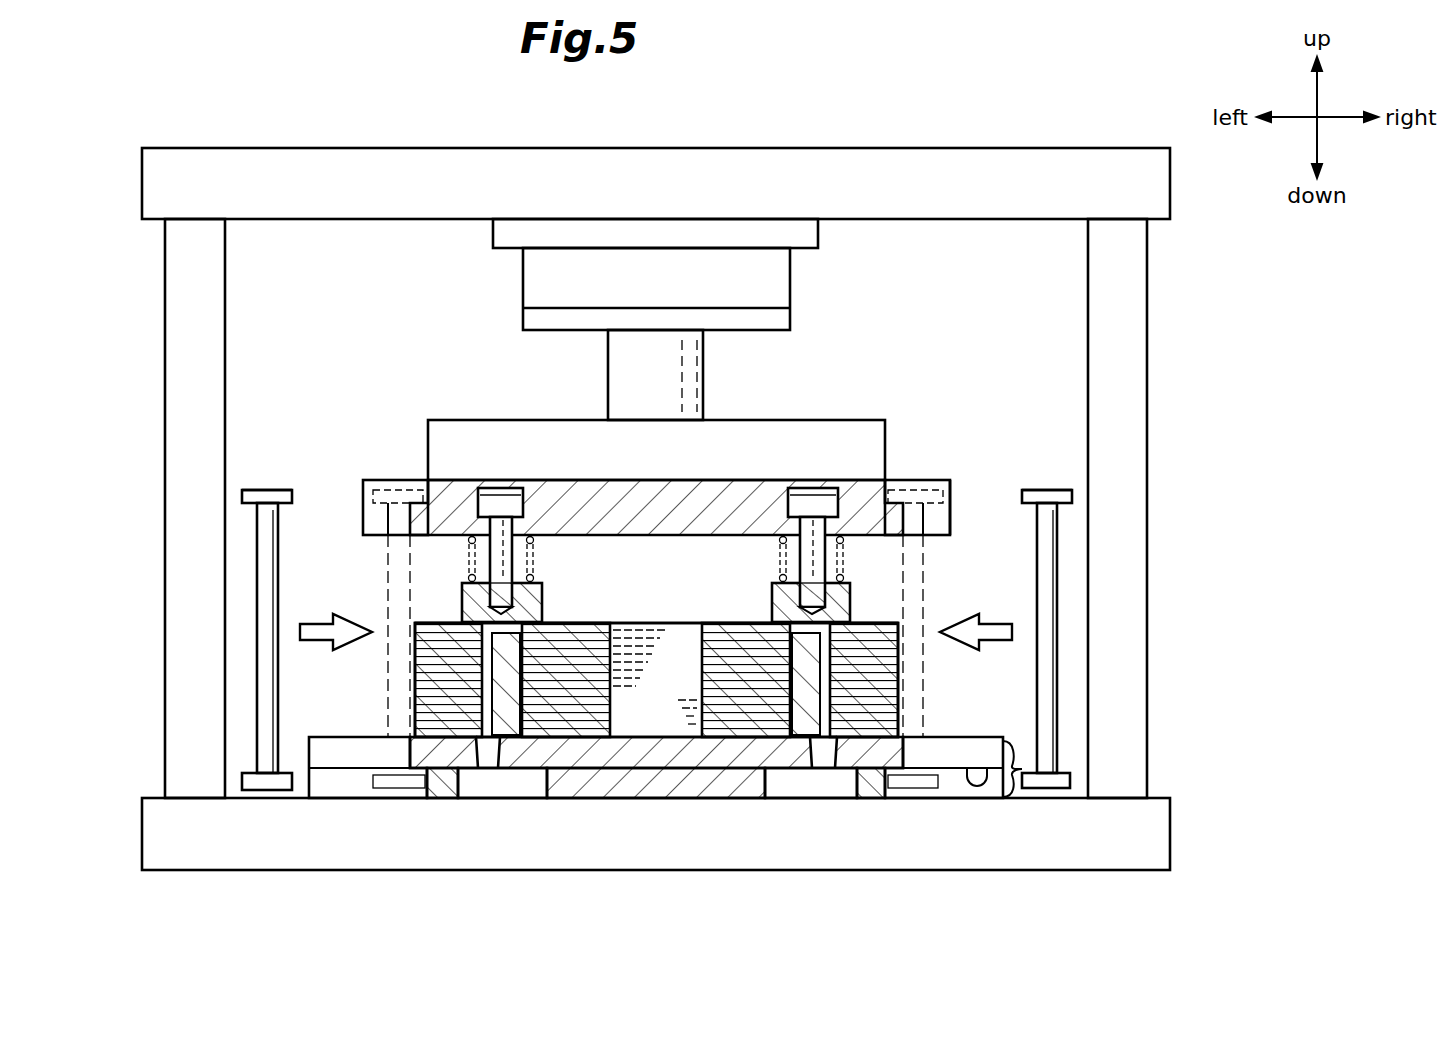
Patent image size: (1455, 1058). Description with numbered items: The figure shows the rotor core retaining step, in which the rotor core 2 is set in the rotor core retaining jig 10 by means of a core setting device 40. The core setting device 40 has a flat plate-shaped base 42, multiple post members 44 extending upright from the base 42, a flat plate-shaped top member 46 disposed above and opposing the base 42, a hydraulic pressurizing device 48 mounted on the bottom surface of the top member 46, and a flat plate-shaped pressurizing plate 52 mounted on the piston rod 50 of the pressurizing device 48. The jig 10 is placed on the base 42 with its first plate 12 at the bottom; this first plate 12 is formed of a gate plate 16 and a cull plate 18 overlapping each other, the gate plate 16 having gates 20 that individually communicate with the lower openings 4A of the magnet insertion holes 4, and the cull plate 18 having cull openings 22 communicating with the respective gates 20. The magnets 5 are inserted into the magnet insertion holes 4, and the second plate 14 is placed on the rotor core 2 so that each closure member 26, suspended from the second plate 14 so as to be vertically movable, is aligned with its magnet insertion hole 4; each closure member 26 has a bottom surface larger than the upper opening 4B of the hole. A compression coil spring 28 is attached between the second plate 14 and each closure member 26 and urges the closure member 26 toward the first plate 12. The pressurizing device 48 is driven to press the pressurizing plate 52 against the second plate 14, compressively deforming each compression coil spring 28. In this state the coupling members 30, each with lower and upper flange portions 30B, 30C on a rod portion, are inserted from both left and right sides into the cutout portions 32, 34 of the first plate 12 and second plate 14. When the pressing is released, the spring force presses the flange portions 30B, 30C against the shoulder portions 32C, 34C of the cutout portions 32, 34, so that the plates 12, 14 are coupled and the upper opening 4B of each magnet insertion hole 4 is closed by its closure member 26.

The rotor core 2 is at (655, 657).
The magnet insertion holes 4 is at (487, 697).
The lower openings 4A is at (497, 729).
The upper opening 4B is at (540, 608).
The magnets 5 is at (500, 652).
The rotor core retaining jig 10 is at (675, 653).
The first plate 12 is at (1025, 766).
The second plate 14 is at (740, 490).
The gate plate 16 is at (725, 760).
The cull plate 18 is at (603, 790).
The gates 20 is at (480, 760).
The cull openings 22 is at (540, 790).
The closure members 26 is at (462, 607).
The compression coil spring 28 is at (841, 536).
The coupling members 30 is at (260, 561).
The flange portion 30B is at (1062, 780).
The flange portion 30C is at (1062, 497).
The cutout portions 32 is at (340, 757).
The shoulder portions 32C is at (975, 770).
The cutout portions 34 is at (365, 517).
The shoulder portions 34C is at (950, 488).
The core setting device 40 is at (663, 509).
The base 42 is at (1075, 855).
The post members 44 is at (180, 298).
The top member 46 is at (790, 162).
The pressurizing device 48 is at (775, 275).
The piston rod 50 is at (690, 352).
The pressurizing plate 52 is at (490, 438).